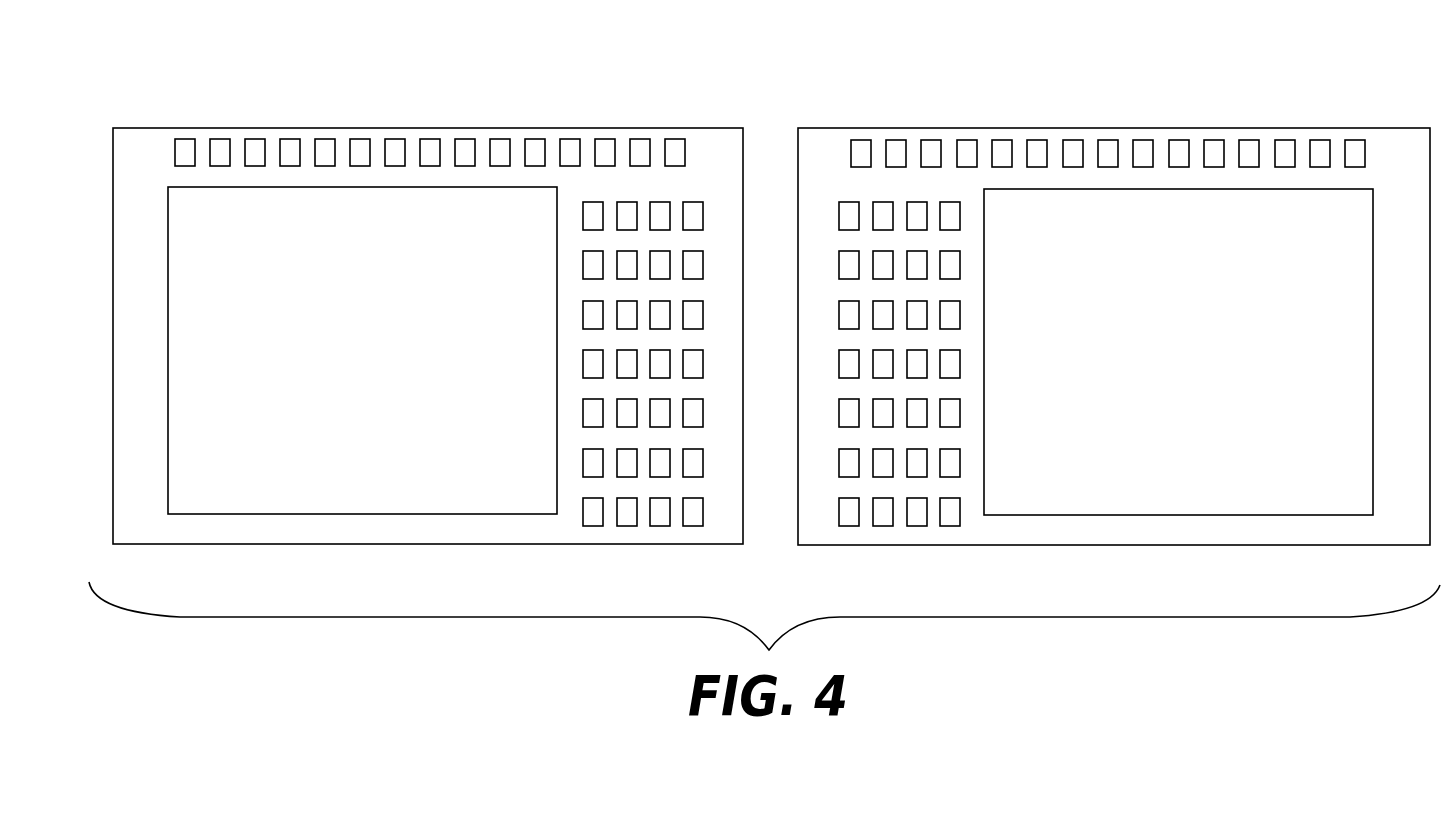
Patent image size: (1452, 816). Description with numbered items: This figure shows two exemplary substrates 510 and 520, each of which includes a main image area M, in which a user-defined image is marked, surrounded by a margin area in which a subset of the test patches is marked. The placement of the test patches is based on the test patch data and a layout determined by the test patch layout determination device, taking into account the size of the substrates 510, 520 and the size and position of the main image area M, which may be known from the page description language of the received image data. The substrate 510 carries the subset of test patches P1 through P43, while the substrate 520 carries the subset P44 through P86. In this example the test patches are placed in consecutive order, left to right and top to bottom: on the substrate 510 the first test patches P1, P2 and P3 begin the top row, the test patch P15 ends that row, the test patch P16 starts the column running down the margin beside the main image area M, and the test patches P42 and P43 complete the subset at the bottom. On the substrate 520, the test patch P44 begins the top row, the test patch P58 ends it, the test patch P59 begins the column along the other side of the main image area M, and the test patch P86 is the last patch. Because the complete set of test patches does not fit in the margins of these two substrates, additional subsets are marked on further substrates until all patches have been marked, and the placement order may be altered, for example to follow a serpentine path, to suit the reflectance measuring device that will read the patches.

The substrate 510 is at (405, 127).
The substrate 520 is at (1084, 127).
The main image area M is at (387, 515).
The test patch P1 is at (185, 138).
The test patch P2 is at (220, 138).
The test patch P3 is at (255, 138).
The test patch P15 is at (683, 139).
The test patch P16 is at (593, 201).
The test patch P42 is at (655, 526).
The test patch P43 is at (689, 526).
The test patch P44 is at (857, 140).
The test patch P58 is at (1346, 140).
The test patch P59 is at (840, 202).
The test patch P86 is at (950, 526).